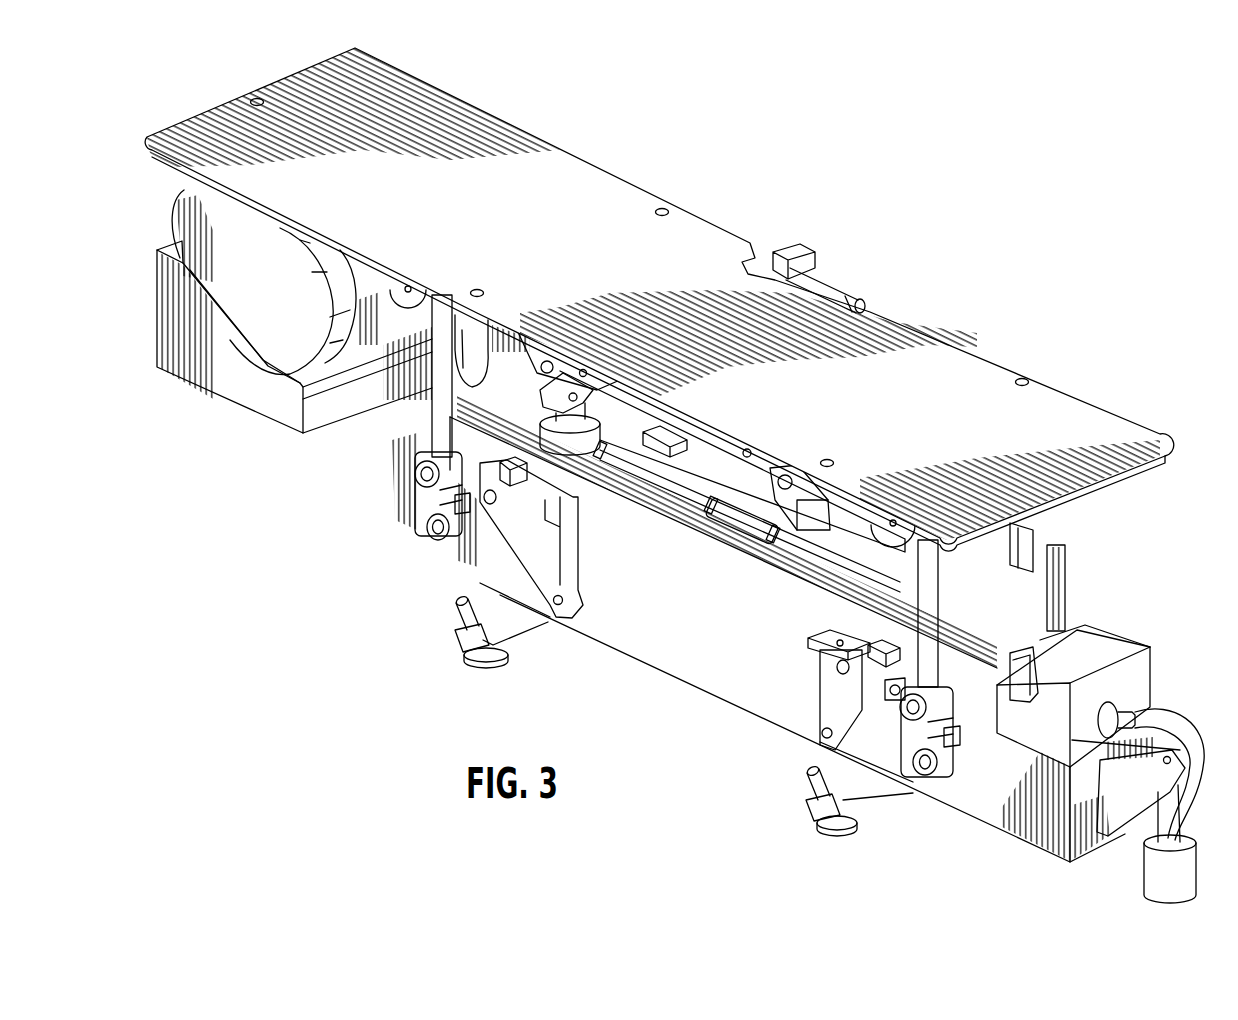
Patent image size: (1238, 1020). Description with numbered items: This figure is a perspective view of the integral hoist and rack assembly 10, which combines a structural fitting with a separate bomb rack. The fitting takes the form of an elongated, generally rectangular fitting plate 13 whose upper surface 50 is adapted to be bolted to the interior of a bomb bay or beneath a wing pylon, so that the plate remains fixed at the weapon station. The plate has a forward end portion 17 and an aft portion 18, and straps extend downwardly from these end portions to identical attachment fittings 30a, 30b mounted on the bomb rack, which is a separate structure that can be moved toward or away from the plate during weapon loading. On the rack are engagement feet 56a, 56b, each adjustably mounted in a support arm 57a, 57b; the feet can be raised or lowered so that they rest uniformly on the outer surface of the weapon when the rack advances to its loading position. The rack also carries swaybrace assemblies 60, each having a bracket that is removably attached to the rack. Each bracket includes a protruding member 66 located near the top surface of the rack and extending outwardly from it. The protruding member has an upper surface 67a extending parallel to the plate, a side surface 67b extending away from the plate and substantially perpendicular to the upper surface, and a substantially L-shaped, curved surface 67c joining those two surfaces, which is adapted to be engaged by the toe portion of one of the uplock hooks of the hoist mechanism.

The integral hoist and rack assembly 10 is at (910, 196).
The forward end portion 17 is at (536, 124).
The upper surface 50 is at (563, 157).
The rectangular fitting plate 13 is at (647, 192).
The aft portion 18 is at (1020, 363).
The attachment fitting 30a is at (427, 500).
The attachment fitting 30b is at (945, 752).
The engagement foot 56a is at (478, 662).
The engagement foot 56b is at (820, 830).
The support arm 57a is at (520, 615).
The support arm 57b is at (893, 778).
The swaybrace assembly 60 is at (598, 554).
The protruding member 66 is at (824, 630).
The upper surface 67a is at (840, 640).
The side surface 67b is at (808, 640).
The L-shaped curved surface 67c is at (796, 658).